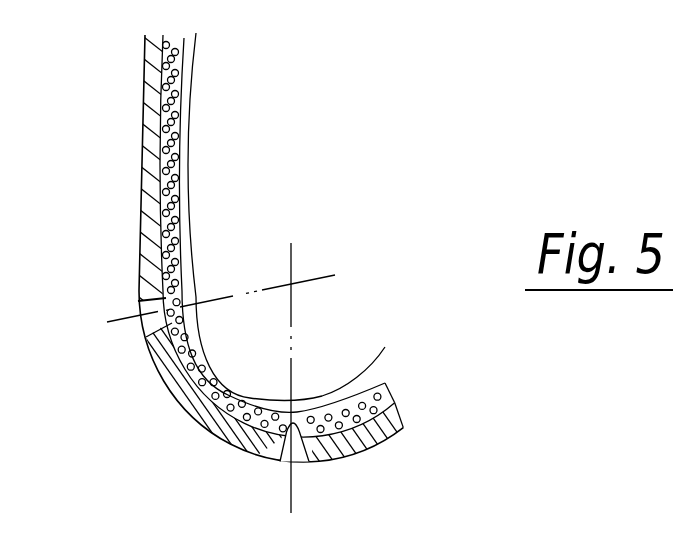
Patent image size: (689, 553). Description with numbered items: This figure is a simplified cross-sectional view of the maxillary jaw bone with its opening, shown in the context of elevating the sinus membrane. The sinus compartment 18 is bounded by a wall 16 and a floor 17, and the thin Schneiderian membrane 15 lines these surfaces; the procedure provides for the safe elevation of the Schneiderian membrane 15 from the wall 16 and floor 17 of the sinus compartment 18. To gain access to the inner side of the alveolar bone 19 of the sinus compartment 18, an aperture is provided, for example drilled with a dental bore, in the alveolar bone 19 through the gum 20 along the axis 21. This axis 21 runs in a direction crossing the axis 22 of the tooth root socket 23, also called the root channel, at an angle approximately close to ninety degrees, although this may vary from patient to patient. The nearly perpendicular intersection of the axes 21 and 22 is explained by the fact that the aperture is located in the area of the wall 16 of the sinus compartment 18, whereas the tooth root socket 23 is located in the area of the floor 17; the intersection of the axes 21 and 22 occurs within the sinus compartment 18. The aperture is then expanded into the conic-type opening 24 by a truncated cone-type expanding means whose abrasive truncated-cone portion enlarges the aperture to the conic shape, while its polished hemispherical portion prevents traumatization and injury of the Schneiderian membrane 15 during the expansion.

The Schneiderian membrane 15 is at (190, 243).
The wall 16 is at (200, 152).
The floor 17 is at (322, 375).
The sinus compartment 18 is at (367, 155).
The alveolar bone 19 is at (388, 404).
The gum 20 is at (205, 427).
The axis 21 is at (108, 320).
The axis of the tooth root socket 22 is at (293, 486).
The tooth root socket 23 is at (303, 462).
The conic-type opening 24 is at (140, 300).